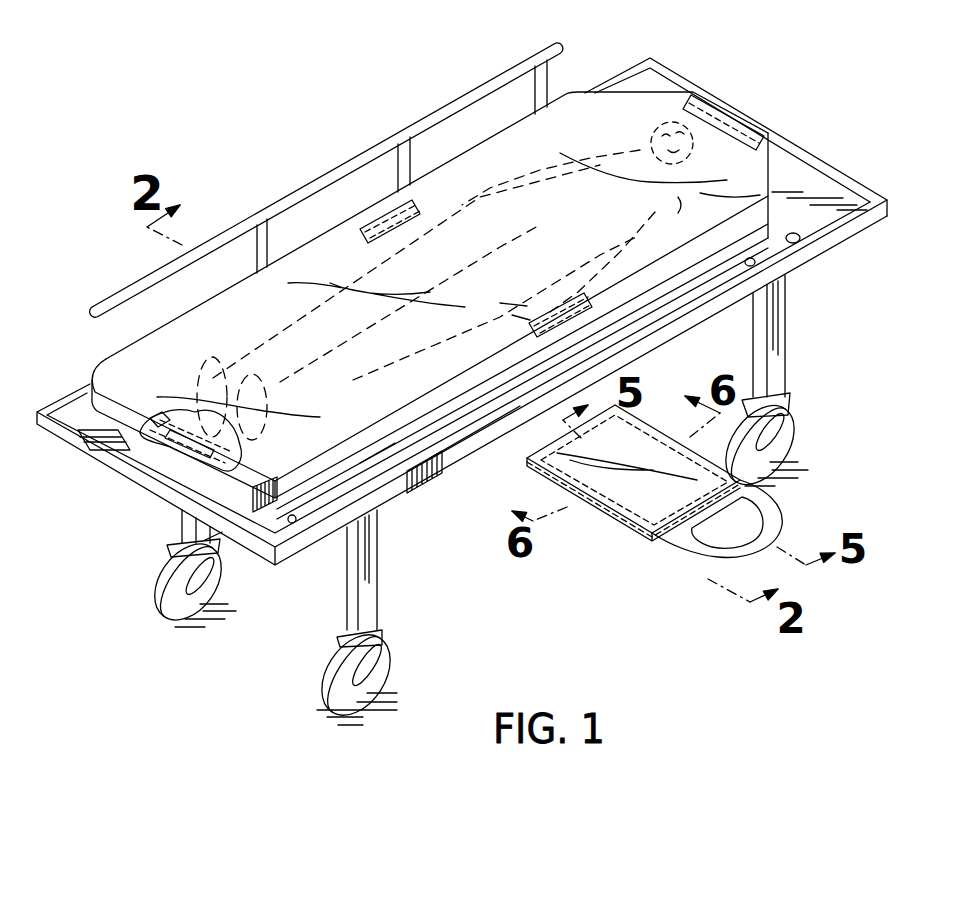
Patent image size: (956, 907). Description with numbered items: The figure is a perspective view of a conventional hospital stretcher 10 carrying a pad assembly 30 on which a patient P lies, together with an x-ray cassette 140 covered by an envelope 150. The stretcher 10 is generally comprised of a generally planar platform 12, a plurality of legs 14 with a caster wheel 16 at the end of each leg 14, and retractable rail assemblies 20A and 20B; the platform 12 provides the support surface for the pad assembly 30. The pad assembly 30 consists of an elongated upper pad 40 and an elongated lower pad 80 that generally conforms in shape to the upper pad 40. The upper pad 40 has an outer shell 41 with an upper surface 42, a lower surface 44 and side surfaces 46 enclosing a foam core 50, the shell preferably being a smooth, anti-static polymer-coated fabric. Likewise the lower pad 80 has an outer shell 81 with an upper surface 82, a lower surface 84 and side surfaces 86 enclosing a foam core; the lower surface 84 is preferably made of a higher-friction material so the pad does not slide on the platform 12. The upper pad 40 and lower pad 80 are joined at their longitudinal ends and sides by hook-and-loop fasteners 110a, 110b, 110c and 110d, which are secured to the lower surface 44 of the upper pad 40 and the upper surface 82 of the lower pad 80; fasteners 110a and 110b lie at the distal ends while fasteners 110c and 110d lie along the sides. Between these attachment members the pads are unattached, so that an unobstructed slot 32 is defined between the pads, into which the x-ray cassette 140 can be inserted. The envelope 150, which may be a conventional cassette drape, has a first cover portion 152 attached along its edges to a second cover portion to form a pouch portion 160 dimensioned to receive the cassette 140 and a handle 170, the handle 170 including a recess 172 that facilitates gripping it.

The stretcher 10 is at (835, 165).
The platform 12 is at (80, 417).
The legs 14 is at (778, 355).
The caster wheel 16 is at (790, 430).
The retractable rail assembly 20A is at (383, 145).
The retractable rail assembly 20B is at (735, 273).
The pad assembly 30 is at (298, 238).
The slot 32 is at (473, 388).
The upper pad 40 is at (346, 228).
The outer shell 41 is at (408, 413).
The upper surface 42 is at (457, 187).
The lower surface 44 is at (393, 432).
The side surfaces 46 is at (770, 237).
The foam core 50 is at (173, 413).
The lower pad 80 is at (313, 500).
The outer shell 81 is at (372, 455).
The upper surface 82 is at (225, 515).
The lower surface 84 is at (100, 437).
The side surfaces 86 is at (778, 310).
The hook-and-loop fastener 110a is at (724, 123).
The hook-and-loop fastener 110b is at (190, 447).
The hook-and-loop fastener 110c is at (380, 200).
The hook-and-loop fastener 110d is at (668, 337).
The x-ray cassette 140 is at (653, 515).
The envelope 150 is at (617, 535).
The first cover portion 152 is at (647, 447).
The pouch portion 160 is at (645, 513).
The handle 170 is at (717, 577).
The recess 172 is at (718, 537).
The patient P is at (567, 140).